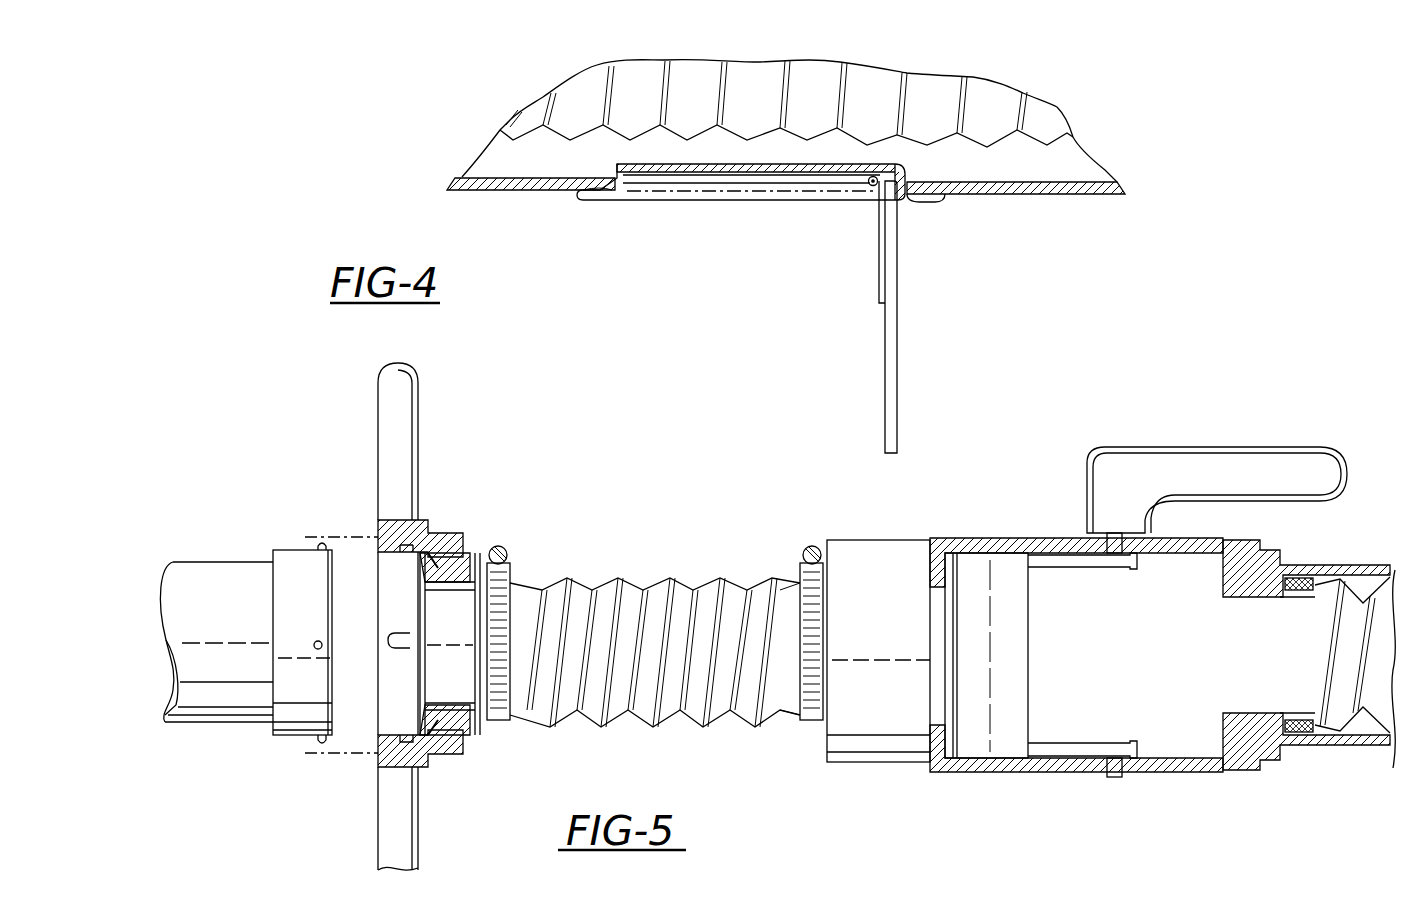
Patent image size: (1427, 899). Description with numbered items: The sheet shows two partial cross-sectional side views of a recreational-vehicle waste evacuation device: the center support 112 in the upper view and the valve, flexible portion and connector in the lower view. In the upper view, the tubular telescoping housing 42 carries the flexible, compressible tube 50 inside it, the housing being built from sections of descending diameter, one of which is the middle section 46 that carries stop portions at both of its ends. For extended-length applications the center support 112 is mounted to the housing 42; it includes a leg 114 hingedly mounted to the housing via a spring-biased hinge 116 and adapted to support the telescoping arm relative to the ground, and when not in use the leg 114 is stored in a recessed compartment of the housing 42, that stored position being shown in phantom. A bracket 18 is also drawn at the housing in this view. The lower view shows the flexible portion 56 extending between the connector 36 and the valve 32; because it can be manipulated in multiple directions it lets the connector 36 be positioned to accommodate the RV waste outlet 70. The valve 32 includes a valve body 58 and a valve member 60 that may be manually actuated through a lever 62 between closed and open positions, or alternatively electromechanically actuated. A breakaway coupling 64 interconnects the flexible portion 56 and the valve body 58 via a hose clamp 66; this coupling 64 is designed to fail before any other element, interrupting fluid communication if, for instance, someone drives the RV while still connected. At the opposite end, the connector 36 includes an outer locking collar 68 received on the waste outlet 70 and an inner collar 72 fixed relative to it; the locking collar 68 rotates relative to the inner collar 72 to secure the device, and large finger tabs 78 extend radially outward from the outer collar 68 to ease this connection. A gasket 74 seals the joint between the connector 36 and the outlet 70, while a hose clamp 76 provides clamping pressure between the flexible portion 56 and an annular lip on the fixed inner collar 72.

In FIG. 4, the mounting bracket 18 is at (703, 183).
In FIG. 5, the valve 32 is at (1017, 540).
In FIG. 5, the connector 36 is at (463, 473).
In FIG. 4, the telescoping housing 42 is at (457, 165).
In FIG. 4, the middle section 46 is at (1068, 190).
In FIG. 4, the flexible, compressible tube or hose 50 is at (922, 105).
In FIG. 5, the flexible portion 56 is at (612, 708).
In FIG. 5, the valve body 58 is at (1160, 755).
In FIG. 5, the valve member 60 is at (1020, 628).
In FIG. 5, the lever 62 is at (1273, 455).
In FIG. 5, the breakaway coupling 64 is at (848, 545).
In FIG. 5, the hose clamp 66 is at (800, 580).
In FIG. 5, the outer locking collar 68 is at (428, 526).
In FIG. 5, the waste outlet 70 is at (242, 562).
In FIG. 5, the inner collar 72 is at (470, 725).
In FIG. 5, the gasket 74 is at (425, 573).
In FIG. 5, the hose clamp 76 is at (512, 552).
In FIG. 5, the finger tabs 78 is at (385, 425).
In FIG. 4, the center support 112 is at (700, 241).
In FIG. 4, the leg 114 is at (783, 210).
In FIG. 4, the spring-biased hinge 116 is at (903, 172).